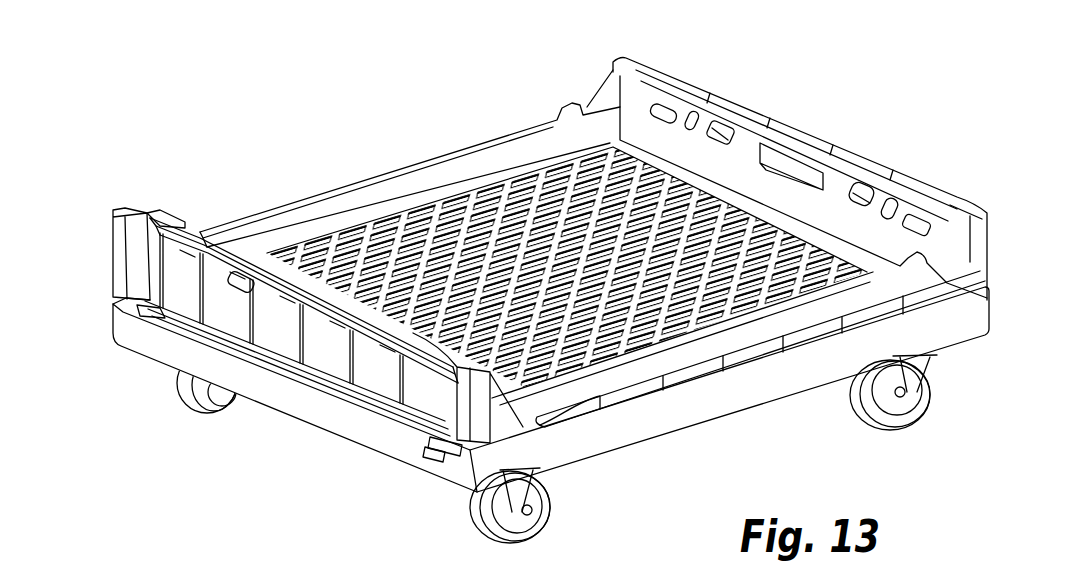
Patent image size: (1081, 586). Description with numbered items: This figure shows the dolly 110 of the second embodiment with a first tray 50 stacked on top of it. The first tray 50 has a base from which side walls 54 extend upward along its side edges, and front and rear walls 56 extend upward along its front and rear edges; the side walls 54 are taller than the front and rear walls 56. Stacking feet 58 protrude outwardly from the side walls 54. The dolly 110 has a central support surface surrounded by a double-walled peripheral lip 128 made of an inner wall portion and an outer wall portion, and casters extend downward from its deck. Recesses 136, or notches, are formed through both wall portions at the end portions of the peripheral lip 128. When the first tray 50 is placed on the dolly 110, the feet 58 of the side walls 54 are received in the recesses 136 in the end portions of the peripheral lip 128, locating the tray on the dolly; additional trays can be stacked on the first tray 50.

The first tray 50 is at (958, 168).
The side walls 54 is at (753, 107).
The front and rear walls 56 is at (387, 172).
The stacking feet 58 is at (137, 311).
The dolly 110 is at (1002, 312).
The peripheral lip 128 is at (293, 390).
The recesses 136 is at (140, 310).